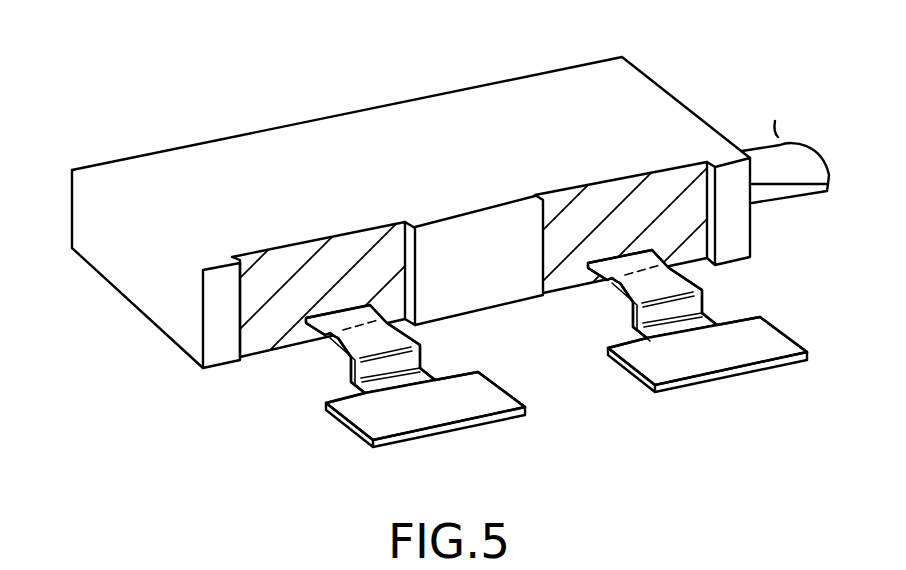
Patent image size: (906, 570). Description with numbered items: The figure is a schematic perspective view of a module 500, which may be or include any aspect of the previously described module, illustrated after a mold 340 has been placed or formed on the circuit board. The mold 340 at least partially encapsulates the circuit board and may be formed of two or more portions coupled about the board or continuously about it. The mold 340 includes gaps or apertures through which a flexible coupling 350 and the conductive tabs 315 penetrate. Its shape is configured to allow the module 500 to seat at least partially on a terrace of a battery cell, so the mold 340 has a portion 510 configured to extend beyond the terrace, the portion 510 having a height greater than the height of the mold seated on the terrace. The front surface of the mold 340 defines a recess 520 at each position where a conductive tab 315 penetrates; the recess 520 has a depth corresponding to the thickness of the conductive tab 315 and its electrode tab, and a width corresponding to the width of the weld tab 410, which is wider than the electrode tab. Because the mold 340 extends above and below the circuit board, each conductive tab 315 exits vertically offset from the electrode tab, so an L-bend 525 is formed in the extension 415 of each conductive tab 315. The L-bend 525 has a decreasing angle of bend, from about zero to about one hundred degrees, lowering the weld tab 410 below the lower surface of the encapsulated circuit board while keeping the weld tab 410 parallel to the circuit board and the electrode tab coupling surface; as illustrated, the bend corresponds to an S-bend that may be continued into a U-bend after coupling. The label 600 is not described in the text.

The module 500 is at (112, 77).
The mold 340 is at (263, 143).
The flexible coupling 350 is at (765, 150).
The portion of the mold 510 is at (193, 345).
The recess 520 is at (293, 240).
The L-bend 525 is at (422, 352).
The extension 415 is at (345, 370).
The conductive tab 315 is at (364, 436).
The weld tab 410 is at (467, 430).
The assembly label 600 is at (28, 558).